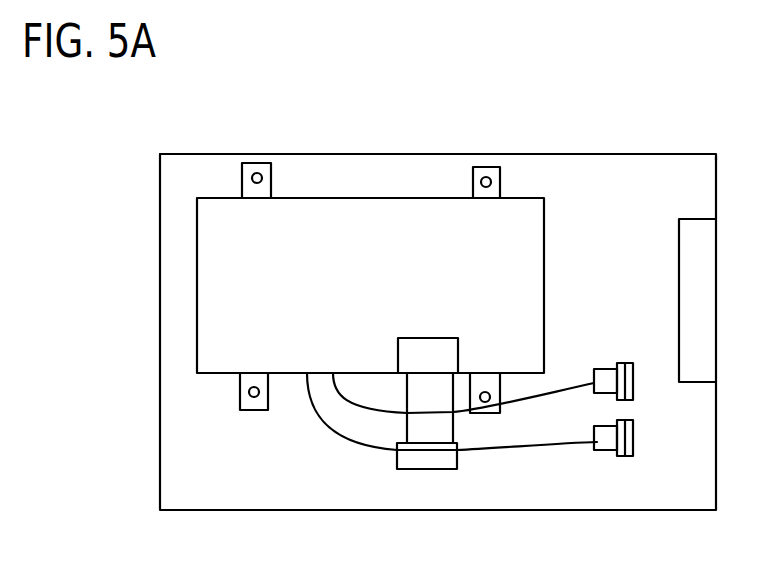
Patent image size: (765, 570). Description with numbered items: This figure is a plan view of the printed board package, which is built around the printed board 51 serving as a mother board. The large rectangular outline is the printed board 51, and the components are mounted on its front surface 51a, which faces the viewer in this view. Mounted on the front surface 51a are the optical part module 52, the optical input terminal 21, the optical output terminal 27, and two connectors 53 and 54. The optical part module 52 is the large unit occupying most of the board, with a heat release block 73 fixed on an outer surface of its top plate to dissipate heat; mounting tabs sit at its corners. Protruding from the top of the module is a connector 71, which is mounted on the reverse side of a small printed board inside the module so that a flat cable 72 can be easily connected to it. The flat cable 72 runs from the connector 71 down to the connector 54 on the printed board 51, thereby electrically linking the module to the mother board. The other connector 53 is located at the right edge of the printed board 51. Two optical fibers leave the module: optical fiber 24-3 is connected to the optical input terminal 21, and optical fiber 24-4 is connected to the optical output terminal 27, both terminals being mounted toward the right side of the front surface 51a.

The printed board 51 is at (158, 430).
The front surface 51a is at (626, 183).
The optical part module 52 is at (424, 198).
The connector 53 is at (705, 268).
The connector 54 is at (442, 462).
The connector 71 is at (447, 352).
The flat cable 72 is at (443, 430).
The heat release block 73 is at (210, 248).
The optical output terminal 27 is at (633, 383).
The optical input terminal 21 is at (633, 452).
The optical fiber 24-4 is at (563, 400).
The optical fiber 24-3 is at (550, 445).